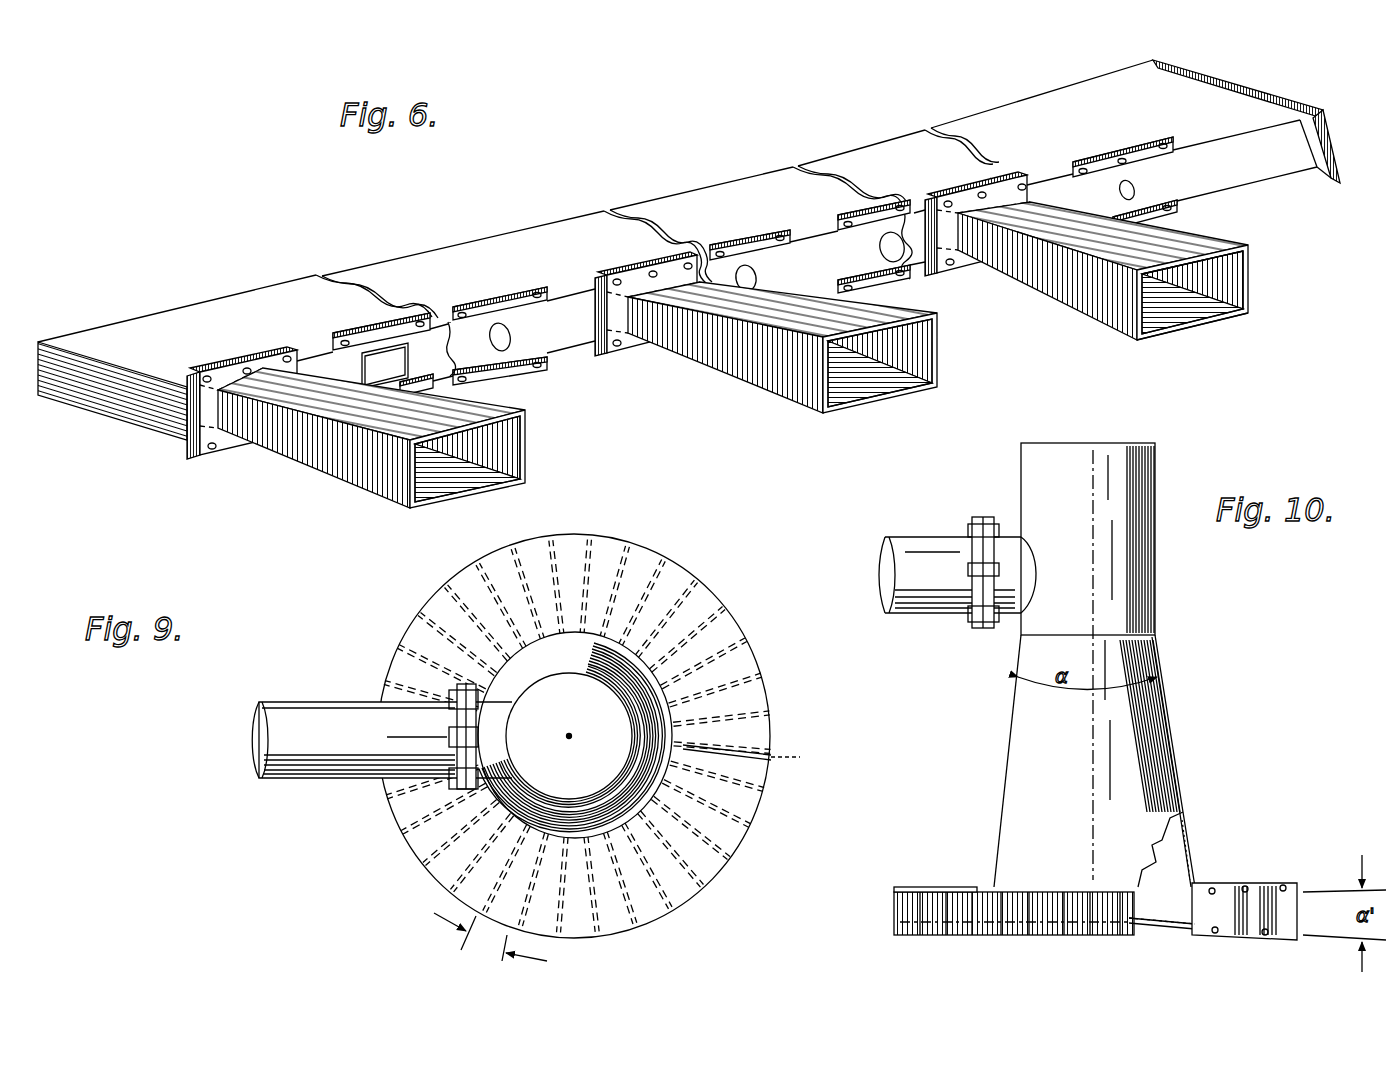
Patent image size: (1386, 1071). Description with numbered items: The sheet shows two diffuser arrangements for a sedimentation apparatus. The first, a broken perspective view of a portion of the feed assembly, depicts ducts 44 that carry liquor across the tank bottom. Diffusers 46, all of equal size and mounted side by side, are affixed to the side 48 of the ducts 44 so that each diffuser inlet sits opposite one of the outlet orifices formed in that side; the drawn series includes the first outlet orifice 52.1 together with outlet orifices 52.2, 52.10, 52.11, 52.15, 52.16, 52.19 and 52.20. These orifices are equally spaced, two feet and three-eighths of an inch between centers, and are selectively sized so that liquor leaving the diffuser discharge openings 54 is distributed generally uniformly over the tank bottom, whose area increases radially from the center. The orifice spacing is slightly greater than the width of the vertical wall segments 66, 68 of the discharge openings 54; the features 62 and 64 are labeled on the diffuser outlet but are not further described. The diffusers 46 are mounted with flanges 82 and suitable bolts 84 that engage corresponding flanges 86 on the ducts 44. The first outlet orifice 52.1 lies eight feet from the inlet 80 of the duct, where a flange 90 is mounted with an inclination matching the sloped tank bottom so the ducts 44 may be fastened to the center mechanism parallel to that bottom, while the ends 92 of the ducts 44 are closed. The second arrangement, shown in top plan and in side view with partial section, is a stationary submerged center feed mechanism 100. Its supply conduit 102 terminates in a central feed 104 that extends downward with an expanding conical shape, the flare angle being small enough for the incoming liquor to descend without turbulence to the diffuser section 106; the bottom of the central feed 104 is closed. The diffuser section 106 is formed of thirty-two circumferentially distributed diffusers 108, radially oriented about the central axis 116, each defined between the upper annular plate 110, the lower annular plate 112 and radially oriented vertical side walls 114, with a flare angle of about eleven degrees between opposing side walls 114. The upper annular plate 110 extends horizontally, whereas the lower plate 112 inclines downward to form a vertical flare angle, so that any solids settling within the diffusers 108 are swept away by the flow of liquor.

In FIG. 6, the ducts 44 is at (847, 152).
In FIG. 6, the diffusers 46 is at (777, 355).
In FIG. 6, the side of ducts 48 is at (1270, 162).
In FIG. 6, the first outlet orifice 52.1 is at (1137, 192).
In FIG. 6, the outlet orifice 52.2 is at (990, 177).
In FIG. 6, the outlet orifice 52.10 is at (862, 246).
In FIG. 6, the outlet orifice 52.11 is at (755, 244).
In FIG. 6, the outlet orifice 52.15 is at (630, 252).
In FIG. 6, the outlet orifice 52.16 is at (507, 318).
In FIG. 6, the outlet orifice 52.19 is at (358, 340).
In FIG. 6, the outlet orifice 52.20 is at (232, 372).
In FIG. 6, the diffuser discharge openings 54 is at (1208, 295).
In FIG. 6, the branch duct outlet end 62 is at (1250, 283).
In FIG. 6, the side wall of branch duct 64 is at (1145, 318).
In FIG. 6, the vertical wall segment 66 is at (1198, 249).
In FIG. 6, the vertical wall segment 68 is at (1176, 322).
In FIG. 6, the inlet 80 is at (1257, 107).
In FIG. 6, the flanges 82 is at (660, 345).
In FIG. 6, the bolts 84 is at (968, 262).
In FIG. 6, the flanges 86 is at (1090, 162).
In FIG. 6, the flange 90 is at (1225, 80).
In FIG. 6, the ends of ducts 92 is at (102, 405).
In FIG. 9, the center feed mechanism 100 is at (392, 858).
In FIG. 9, the supply conduit 102 is at (290, 700).
In FIG. 9, the central feed 104 is at (588, 658).
In FIG. 10, the central feed 104 is at (1186, 780).
In FIG. 10, the diffuser section 106 is at (1065, 910).
In FIG. 9, the diffusers 108 is at (681, 890).
In FIG. 10, the diffusers 108 is at (1056, 932).
In FIG. 10, the upper annular plate 110 is at (894, 895).
In FIG. 10, the lower annular plate 112 is at (915, 933).
In FIG. 9, the side walls 114 is at (795, 761).
In FIG. 10, the side walls 114 is at (1018, 930).
In FIG. 9, the central axis 116 is at (578, 718).
In FIG. 10, the central axis 116 is at (1093, 745).